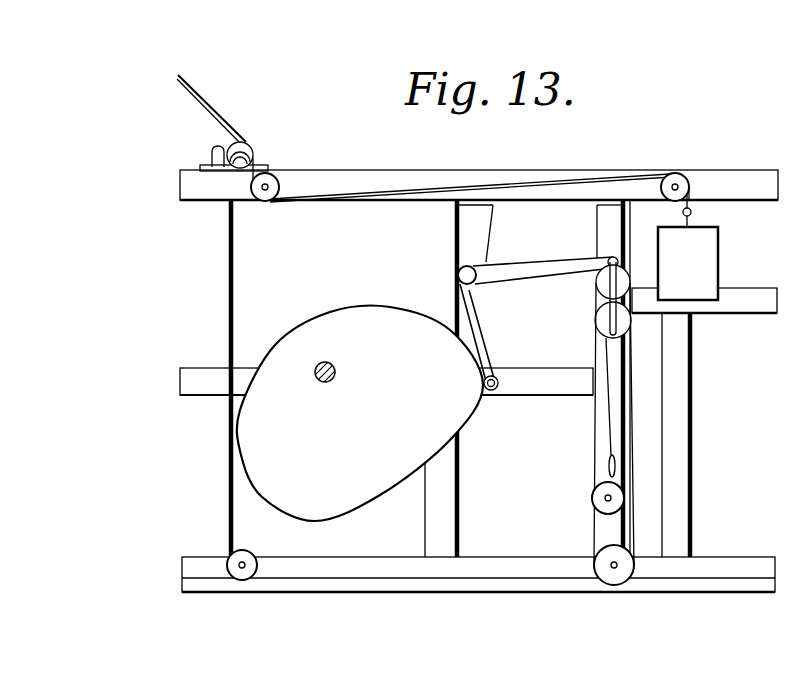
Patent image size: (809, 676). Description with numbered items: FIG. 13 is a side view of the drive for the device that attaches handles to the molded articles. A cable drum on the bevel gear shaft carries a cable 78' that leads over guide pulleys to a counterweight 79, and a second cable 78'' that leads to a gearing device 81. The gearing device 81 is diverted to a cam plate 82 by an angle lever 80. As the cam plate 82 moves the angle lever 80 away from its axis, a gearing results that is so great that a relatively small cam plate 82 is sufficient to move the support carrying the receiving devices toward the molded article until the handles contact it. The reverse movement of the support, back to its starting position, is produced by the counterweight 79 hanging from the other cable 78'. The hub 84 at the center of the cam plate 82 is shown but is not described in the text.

The cable 78' is at (479, 164).
The second cable 78'' is at (195, 378).
The counterweight 79 is at (705, 260).
The angle lever 80 is at (480, 328).
The gearing device 81 is at (603, 323).
The cam plate 82 is at (368, 322).
The cam shaft 84 is at (320, 363).